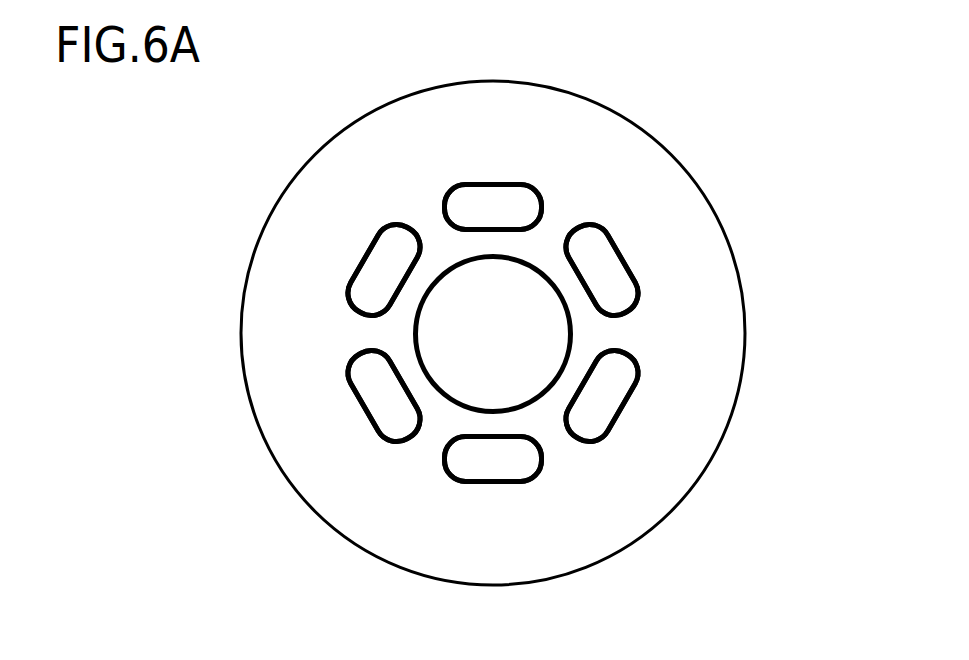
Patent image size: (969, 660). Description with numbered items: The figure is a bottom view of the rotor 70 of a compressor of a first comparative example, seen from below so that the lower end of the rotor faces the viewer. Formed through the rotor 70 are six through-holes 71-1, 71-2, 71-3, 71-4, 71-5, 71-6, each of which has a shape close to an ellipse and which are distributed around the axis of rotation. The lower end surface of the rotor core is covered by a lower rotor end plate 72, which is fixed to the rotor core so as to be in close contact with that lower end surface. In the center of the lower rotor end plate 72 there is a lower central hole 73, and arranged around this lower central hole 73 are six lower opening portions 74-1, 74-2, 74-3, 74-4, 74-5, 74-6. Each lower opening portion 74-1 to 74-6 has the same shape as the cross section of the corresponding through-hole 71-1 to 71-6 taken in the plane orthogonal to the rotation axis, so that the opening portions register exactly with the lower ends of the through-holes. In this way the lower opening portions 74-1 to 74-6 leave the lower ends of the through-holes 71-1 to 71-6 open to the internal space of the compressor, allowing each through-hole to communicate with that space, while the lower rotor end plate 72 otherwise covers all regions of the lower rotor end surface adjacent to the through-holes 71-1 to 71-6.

The rotor 70 is at (632, 86).
The through-hole 71-1 is at (513, 209).
The through-hole 71-2 is at (588, 262).
The through-hole 71-3 is at (587, 407).
The through-hole 71-4 is at (515, 455).
The through-hole 71-5 is at (398, 407).
The through-hole 71-6 is at (398, 260).
The lower rotor end plate 72 is at (589, 199).
The lower central hole 73 is at (572, 335).
The lower opening portion 74-1 is at (470, 186).
The lower opening portion 74-2 is at (627, 265).
The lower opening portion 74-3 is at (625, 405).
The lower opening portion 74-4 is at (470, 481).
The lower opening portion 74-5 is at (360, 403).
The lower opening portion 74-6 is at (366, 268).